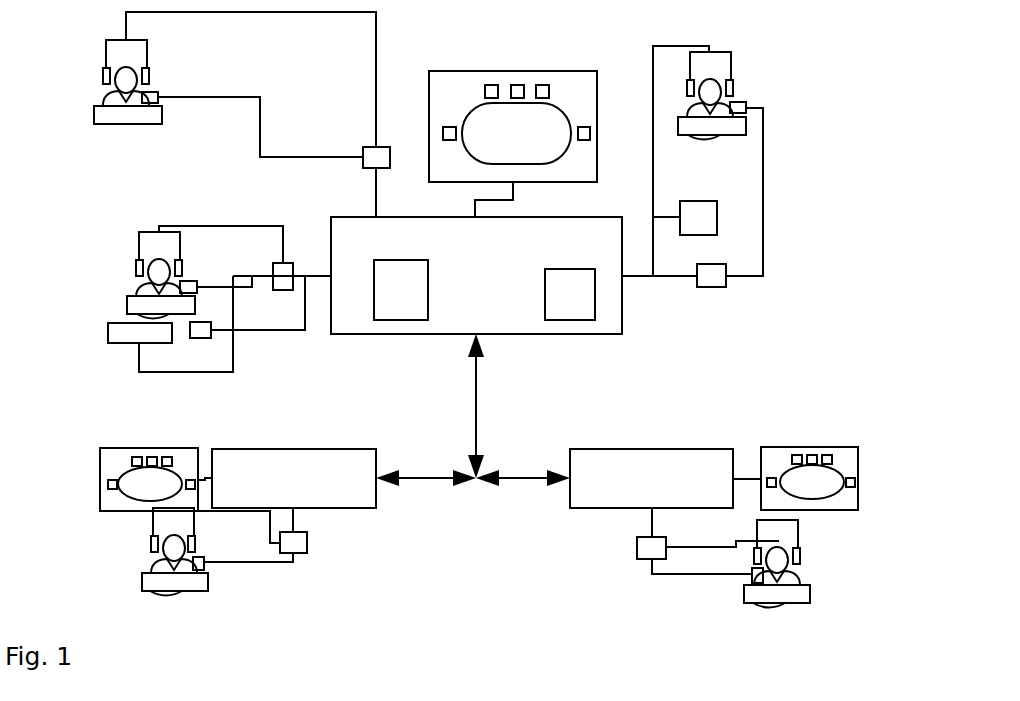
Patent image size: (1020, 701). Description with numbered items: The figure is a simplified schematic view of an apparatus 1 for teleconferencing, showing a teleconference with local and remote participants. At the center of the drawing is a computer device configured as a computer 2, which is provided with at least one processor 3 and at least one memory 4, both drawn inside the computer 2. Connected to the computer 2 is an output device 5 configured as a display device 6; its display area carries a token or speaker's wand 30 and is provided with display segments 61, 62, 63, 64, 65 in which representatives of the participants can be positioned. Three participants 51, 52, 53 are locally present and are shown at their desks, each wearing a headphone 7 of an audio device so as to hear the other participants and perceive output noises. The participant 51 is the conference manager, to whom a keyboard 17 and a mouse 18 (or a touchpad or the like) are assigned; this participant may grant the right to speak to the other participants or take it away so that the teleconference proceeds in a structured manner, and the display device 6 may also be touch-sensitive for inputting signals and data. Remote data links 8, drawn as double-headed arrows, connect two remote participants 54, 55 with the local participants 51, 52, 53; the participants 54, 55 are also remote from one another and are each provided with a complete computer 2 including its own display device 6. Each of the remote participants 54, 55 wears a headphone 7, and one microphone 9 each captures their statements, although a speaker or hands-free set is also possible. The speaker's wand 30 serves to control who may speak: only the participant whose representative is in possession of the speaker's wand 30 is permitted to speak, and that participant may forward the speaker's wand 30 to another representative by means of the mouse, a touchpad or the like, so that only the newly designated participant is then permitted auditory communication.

The apparatus 1 is at (622, 330).
The computer 2 is at (517, 320).
The processor 3 is at (417, 283).
The memory 4 is at (588, 287).
The output device 5 is at (472, 264).
The display device 6 is at (720, 153).
The headphone 7 is at (149, 74).
The remote data links 8 is at (476, 407).
The microphone 9 is at (158, 94).
The keyboard 17 is at (116, 338).
The mouse 18 is at (200, 337).
The speaker's wand 30 is at (485, 127).
The local participant 51 is at (133, 289).
The local participant 52 is at (125, 88).
The local participant 53 is at (712, 93).
The remote participant 54 is at (144, 565).
The remote participant 55 is at (797, 575).
The display segment 61 is at (514, 85).
The display segment 62 is at (541, 84).
The display segment 63 is at (490, 85).
The display segment 64 is at (443, 131).
The display segment 65 is at (590, 132).